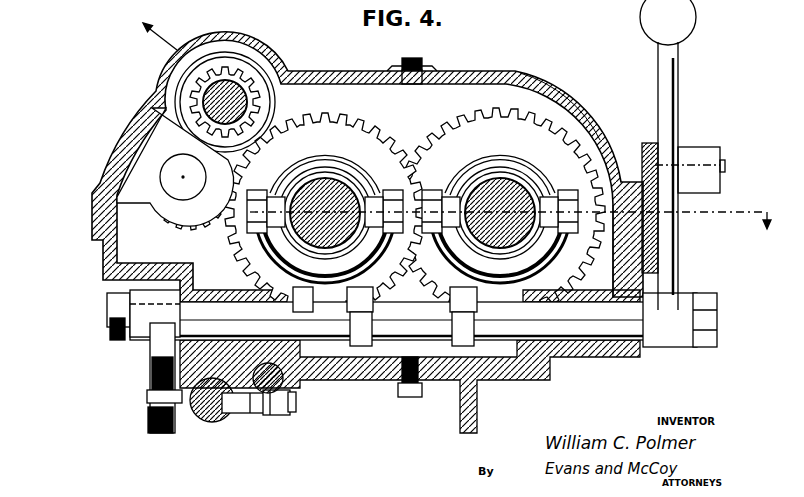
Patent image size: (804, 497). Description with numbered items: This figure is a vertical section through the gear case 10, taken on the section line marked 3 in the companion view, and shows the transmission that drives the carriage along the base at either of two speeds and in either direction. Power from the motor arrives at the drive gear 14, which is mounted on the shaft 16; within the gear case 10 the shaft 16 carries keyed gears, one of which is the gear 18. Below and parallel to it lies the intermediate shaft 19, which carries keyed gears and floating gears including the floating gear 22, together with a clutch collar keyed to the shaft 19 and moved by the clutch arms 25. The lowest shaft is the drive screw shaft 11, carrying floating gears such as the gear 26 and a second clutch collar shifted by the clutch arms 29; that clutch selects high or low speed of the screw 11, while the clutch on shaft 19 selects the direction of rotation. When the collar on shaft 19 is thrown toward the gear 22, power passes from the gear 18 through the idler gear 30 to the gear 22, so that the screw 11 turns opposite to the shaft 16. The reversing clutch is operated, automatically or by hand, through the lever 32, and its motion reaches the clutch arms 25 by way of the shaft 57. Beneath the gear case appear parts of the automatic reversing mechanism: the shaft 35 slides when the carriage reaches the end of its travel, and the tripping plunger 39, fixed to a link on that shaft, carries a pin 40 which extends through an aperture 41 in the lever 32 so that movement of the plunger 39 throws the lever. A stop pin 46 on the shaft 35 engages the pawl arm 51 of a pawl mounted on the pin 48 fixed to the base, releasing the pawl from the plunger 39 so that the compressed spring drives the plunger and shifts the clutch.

The section line 3- 3 is at (451, 137).
The gear case 10 is at (530, 80).
The drive screw shaft 11 is at (565, 160).
The drive gear 14 is at (312, 170).
The shaft 16 is at (203, 100).
The keyed gear 18 is at (163, 97).
The intermediate shaft 19 is at (318, 188).
The floating gear 22 is at (385, 133).
The clutch arms 25 is at (260, 184).
The floating gear 26 is at (565, 118).
The clutch arms 29 is at (432, 190).
The idler gear 30 is at (172, 228).
The lever 32 is at (160, 357).
The shaft 35 is at (287, 387).
The tripping plunger 39 is at (195, 440).
The pin 40 is at (150, 394).
The aperture 41 is at (153, 413).
The stop pin 46 is at (250, 417).
The pin 48 is at (265, 417).
The pawl arm 51 is at (294, 407).
The shaft 57 is at (223, 315).